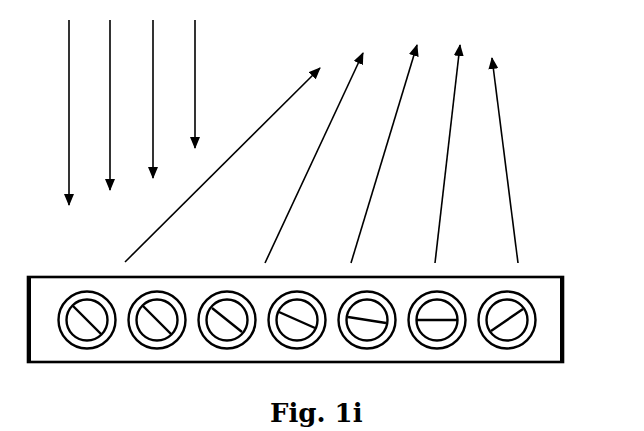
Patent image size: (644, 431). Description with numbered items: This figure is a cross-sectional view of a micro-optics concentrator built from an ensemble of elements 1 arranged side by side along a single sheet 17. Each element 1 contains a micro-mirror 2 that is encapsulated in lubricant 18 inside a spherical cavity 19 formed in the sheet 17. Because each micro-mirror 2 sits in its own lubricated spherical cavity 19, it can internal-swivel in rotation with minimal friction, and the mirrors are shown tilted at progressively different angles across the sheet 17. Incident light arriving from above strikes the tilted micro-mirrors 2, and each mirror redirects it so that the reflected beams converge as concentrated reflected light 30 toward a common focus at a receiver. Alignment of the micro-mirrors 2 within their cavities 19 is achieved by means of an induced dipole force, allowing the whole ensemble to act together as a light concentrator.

The element 1 is at (295, 319).
The micro-mirror 2 is at (90, 304).
The sheet 17 is at (115, 349).
The lubricant 18 is at (207, 348).
The spherical cavity 19 is at (157, 292).
The concentrated reflected light 30 is at (110, 30).